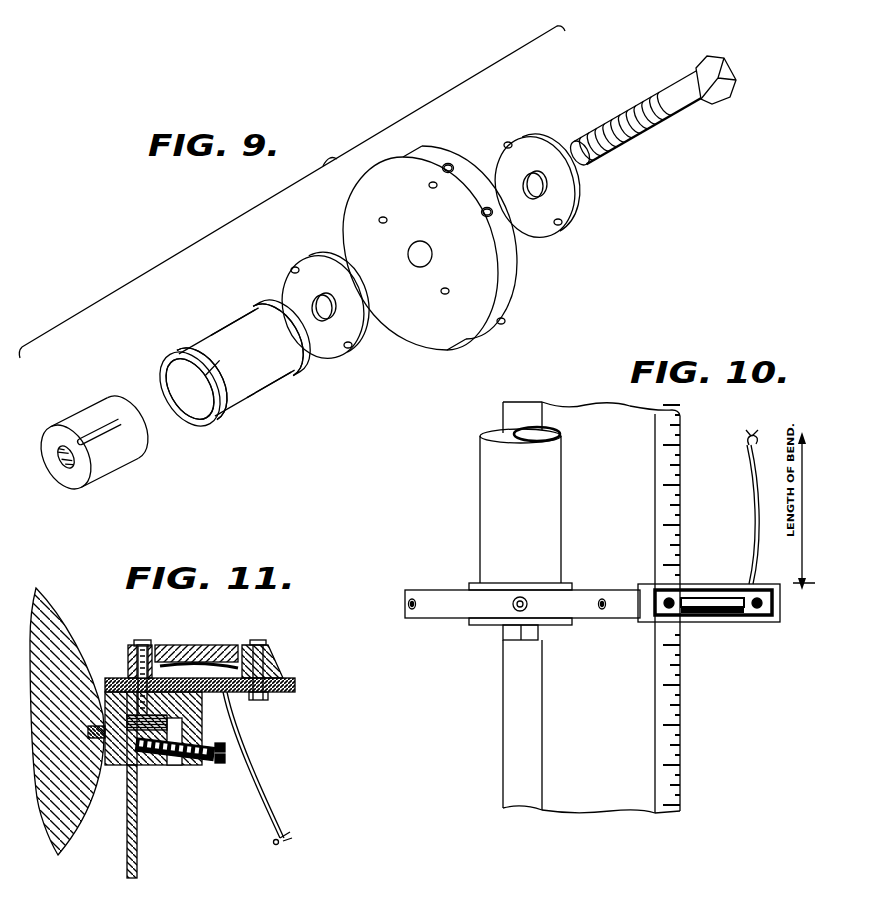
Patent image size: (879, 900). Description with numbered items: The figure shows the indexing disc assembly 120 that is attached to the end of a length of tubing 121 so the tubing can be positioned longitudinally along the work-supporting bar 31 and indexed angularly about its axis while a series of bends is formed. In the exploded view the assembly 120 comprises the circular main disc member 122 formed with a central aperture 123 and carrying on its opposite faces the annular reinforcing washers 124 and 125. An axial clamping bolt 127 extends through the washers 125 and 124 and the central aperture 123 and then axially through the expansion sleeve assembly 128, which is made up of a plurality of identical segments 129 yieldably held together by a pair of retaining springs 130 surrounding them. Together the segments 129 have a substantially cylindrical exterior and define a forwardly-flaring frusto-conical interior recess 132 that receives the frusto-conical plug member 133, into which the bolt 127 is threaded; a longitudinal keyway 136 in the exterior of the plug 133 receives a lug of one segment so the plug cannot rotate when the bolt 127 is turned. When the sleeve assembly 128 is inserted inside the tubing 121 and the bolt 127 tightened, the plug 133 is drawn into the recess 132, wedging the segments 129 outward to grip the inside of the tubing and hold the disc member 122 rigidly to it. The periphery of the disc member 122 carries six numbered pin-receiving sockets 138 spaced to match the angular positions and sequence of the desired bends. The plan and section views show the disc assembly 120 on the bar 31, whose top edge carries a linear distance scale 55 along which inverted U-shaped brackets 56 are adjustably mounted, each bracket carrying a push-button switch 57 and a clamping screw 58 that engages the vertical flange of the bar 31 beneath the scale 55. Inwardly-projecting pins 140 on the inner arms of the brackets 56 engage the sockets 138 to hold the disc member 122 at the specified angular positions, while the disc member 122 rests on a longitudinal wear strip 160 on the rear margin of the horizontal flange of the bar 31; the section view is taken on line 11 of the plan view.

In FIG. 9, the indexing disc assembly 120 is at (342, 130).
In FIG. 10, the length of tubing 121 is at (488, 477).
In FIG. 9, the circular main disc member 122 is at (522, 283).
In FIG. 10, the circular main disc member 122 is at (438, 592).
In FIG. 11, the circular main disc member 122 is at (48, 622).
In FIG. 9, the central aperture 123 is at (417, 246).
In FIG. 9, the annular reinforcing washer 124 is at (310, 264).
In FIG. 9, the annular reinforcing washer 125 is at (530, 147).
In FIG. 9, the axial clamping bolt 127 is at (670, 98).
In FIG. 10, the axial clamping bolt 127 is at (532, 640).
In FIG. 9, the expansion sleeve assembly 128 is at (208, 322).
In FIG. 9, the segments 129 is at (258, 368).
In FIG. 9, the retaining springs 130 is at (187, 345).
In FIG. 9, the frusto-conical interior recess 132 is at (185, 380).
In FIG. 9, the frusto-conical plug member 133 is at (84, 416).
In FIG. 9, the longitudinal keyway 136 is at (112, 436).
In FIG. 9, the pin-receiving sockets 138 is at (486, 209).
In FIG. 10, the pin-receiving sockets 138 is at (602, 600).
In FIG. 11, the pin-receiving sockets 138 is at (89, 724).
In FIG. 11, the inwardly-projecting pins 140 is at (98, 753).
In FIG. 10, the inverted U-shaped brackets 56 is at (650, 622).
In FIG. 11, the inverted U-shaped brackets 56 is at (123, 666).
In FIG. 10, the push-button switch 57 is at (775, 626).
In FIG. 11, the push-button switch 57 is at (273, 663).
In FIG. 10, the linear distance scale 55 is at (683, 716).
In FIG. 11, the linear distance scale 55 is at (167, 762).
In FIG. 11, the clamping screws 58 is at (213, 762).
In FIG. 10, the work-supporting bar 31 is at (562, 700).
In FIG. 11, the work-supporting bar 31 is at (137, 830).
In FIG. 10, the wear strip 160 is at (532, 780).
In FIG. 10, the section line 11- 11 is at (652, 602).